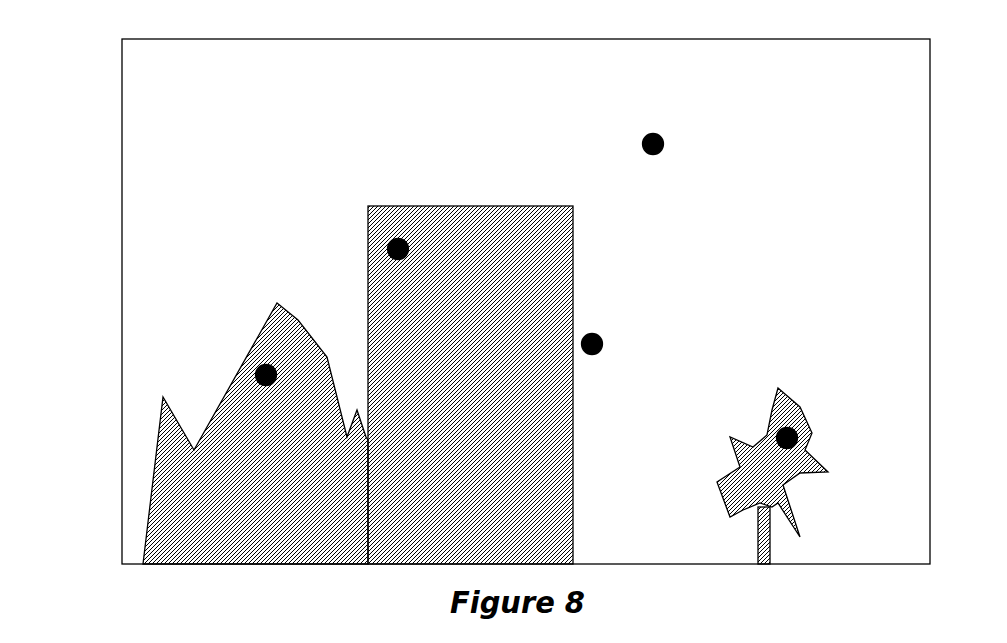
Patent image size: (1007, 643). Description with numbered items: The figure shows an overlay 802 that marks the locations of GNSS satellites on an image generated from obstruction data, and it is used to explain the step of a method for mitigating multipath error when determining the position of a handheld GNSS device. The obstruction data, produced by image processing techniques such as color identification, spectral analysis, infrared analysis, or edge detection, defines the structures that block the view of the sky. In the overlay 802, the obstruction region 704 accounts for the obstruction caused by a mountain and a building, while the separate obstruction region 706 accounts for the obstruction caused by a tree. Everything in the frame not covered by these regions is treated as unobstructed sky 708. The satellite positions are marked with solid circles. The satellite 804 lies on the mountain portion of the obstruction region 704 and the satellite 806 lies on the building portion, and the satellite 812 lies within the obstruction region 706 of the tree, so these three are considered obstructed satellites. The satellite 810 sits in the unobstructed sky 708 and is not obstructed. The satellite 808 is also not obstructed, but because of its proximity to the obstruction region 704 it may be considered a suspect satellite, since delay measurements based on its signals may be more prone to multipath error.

The overlay 802 is at (102, 290).
The obstruction region 704 is at (360, 288).
The obstruction region 706 is at (772, 392).
The unobstructed sky 708 is at (811, 101).
The satellite 804 is at (272, 389).
The satellite 806 is at (406, 262).
The satellite 808 is at (607, 357).
The satellite 810 is at (665, 162).
The satellite 812 is at (814, 448).